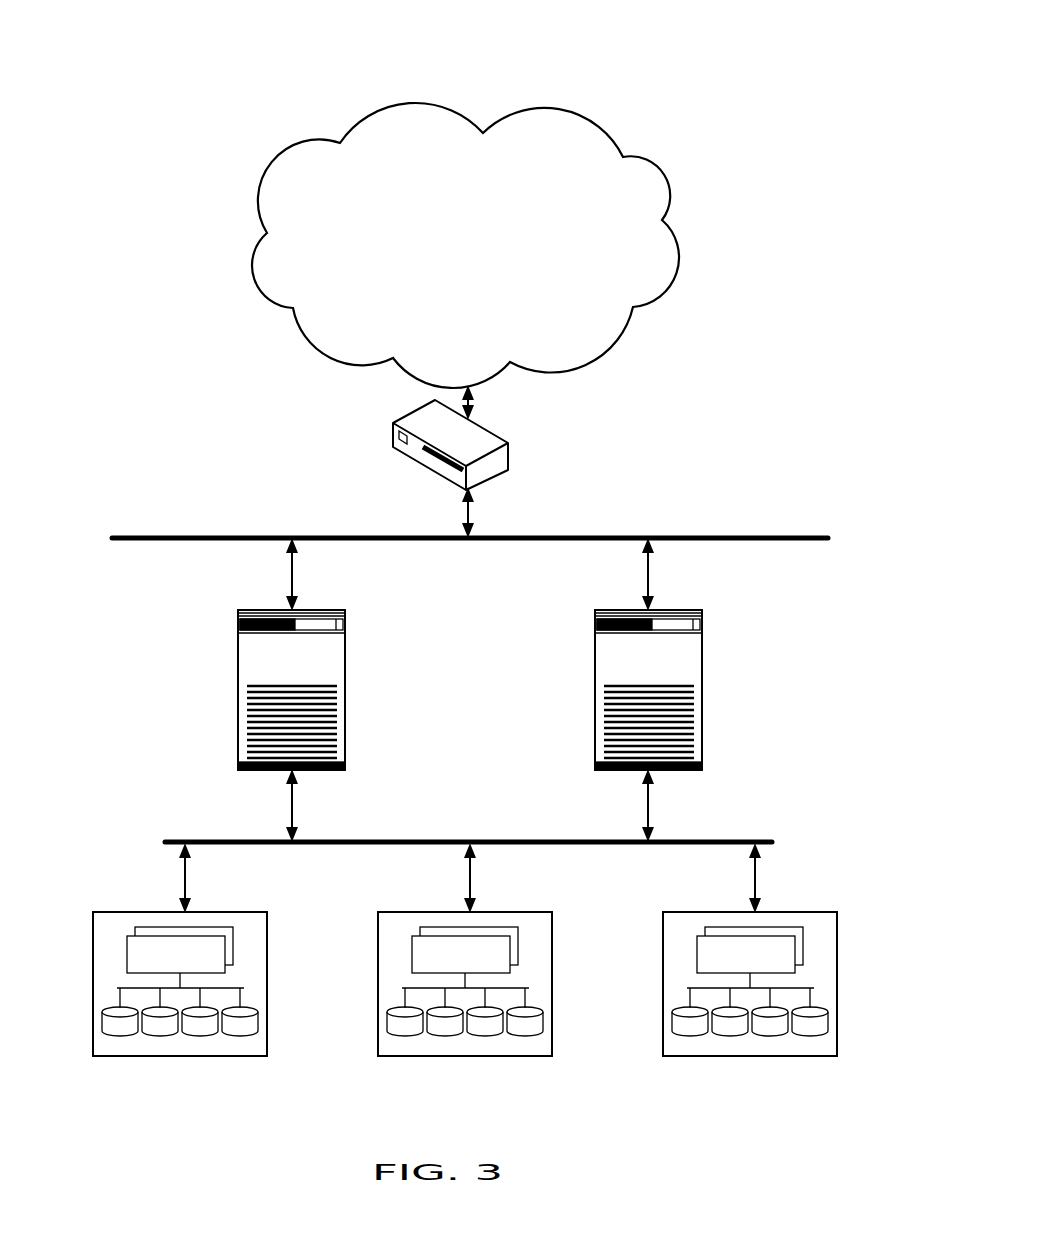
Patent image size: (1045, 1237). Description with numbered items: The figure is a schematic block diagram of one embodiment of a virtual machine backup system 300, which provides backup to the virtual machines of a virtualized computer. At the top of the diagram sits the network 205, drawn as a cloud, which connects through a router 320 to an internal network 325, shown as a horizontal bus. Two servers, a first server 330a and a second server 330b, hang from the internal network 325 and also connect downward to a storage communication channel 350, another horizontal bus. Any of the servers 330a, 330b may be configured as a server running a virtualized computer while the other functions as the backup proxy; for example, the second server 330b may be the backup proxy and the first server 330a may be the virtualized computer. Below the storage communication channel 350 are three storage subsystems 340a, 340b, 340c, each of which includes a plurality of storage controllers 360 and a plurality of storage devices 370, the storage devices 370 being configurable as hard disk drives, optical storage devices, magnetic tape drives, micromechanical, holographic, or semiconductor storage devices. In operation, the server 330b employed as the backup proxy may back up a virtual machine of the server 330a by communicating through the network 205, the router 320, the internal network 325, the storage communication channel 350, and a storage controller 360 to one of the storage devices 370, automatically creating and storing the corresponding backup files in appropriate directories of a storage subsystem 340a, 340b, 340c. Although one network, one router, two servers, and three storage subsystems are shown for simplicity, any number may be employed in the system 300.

The virtual machine backup system 300 is at (98, 63).
The network 205 is at (445, 275).
The router 320 is at (510, 440).
The internal network 325 is at (132, 533).
The first server 330a is at (345, 612).
The second server 330b is at (702, 612).
The storage communication channel 350 is at (395, 840).
The first storage subsystem 340a is at (187, 962).
The second storage subsystem 340b is at (472, 962).
The third storage subsystem 340c is at (758, 962).
The storage controller 360 is at (127, 953).
The storage device 370 is at (102, 1020).